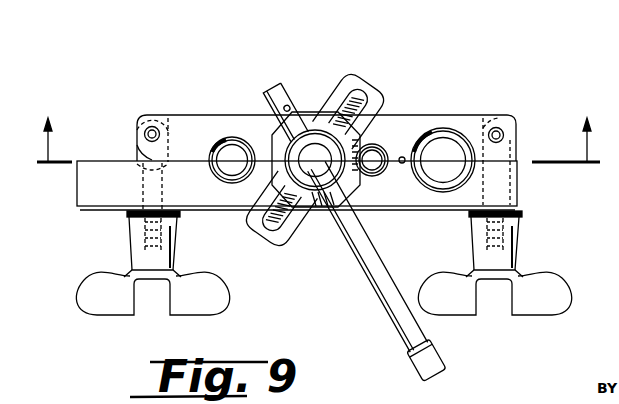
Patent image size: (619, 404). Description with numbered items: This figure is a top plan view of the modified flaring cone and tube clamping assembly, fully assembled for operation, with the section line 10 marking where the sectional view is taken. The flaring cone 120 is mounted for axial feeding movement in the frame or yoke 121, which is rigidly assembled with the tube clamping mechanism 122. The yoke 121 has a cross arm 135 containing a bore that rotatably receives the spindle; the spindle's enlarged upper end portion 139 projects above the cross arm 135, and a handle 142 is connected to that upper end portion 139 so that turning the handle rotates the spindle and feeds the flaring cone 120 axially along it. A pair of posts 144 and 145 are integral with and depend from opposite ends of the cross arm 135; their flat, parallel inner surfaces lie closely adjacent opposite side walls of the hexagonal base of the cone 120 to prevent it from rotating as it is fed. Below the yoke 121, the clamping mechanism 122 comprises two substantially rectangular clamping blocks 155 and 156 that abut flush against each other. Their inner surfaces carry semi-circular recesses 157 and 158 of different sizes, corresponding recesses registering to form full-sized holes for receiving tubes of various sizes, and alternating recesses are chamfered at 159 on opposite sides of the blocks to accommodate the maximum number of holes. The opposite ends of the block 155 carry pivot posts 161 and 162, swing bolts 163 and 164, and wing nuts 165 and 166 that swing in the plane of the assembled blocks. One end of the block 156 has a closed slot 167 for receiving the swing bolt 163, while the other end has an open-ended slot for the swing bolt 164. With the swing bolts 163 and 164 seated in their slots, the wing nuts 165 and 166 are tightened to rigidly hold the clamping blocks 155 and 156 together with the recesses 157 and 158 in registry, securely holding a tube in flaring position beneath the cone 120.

The section line 10- 10 is at (316, 159).
The flaring cone 120 is at (310, 104).
The yoke 121 is at (383, 97).
The tube clamping mechanism 122 is at (478, 107).
The cross arm 135 is at (338, 123).
The upper end portion 139 is at (347, 205).
The handle 142 is at (398, 323).
The post 144 is at (282, 245).
The post 145 is at (350, 77).
The clamping block 155 is at (193, 125).
The clamping block 156 is at (104, 195).
The semi-circular recess 157 is at (236, 147).
The semi-circular recess 158 is at (233, 178).
The chamfer 159 is at (447, 132).
The pivot post 161 is at (148, 127).
The pivot post 162 is at (503, 128).
The swing bolt 163 is at (137, 152).
The swing bolt 164 is at (505, 243).
The wing nut 165 is at (212, 303).
The wing nut 166 is at (545, 303).
The closed slot 167 is at (143, 190).